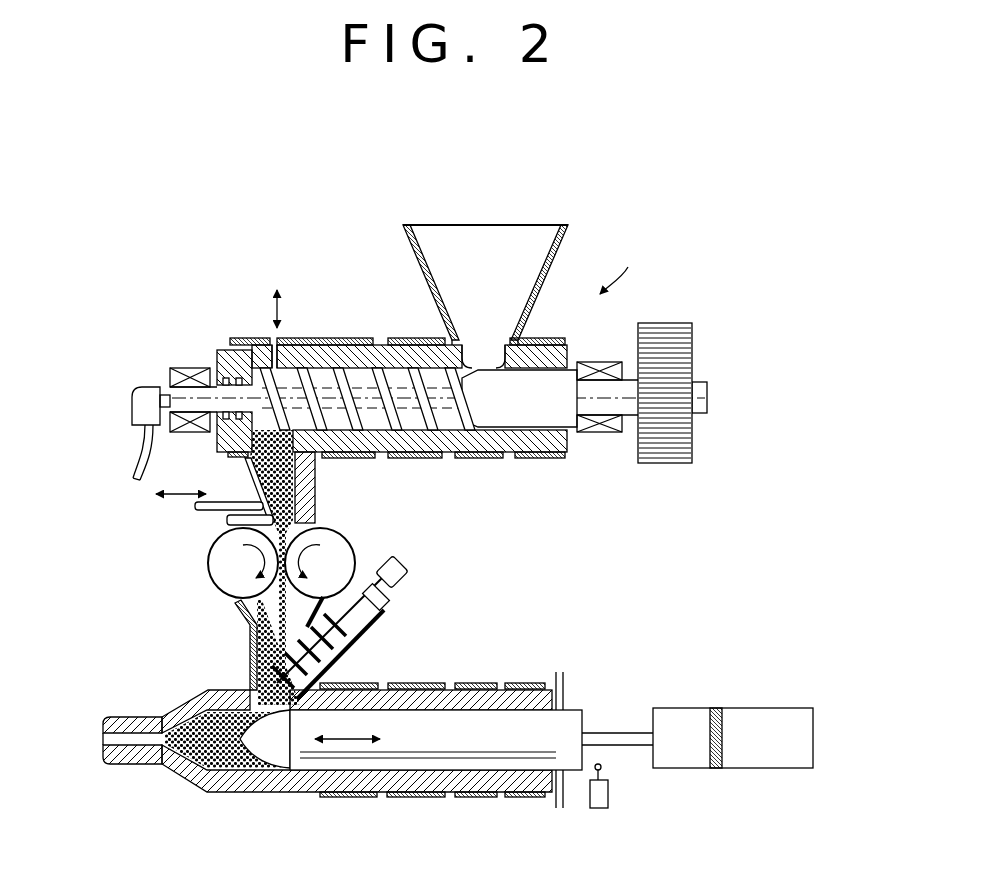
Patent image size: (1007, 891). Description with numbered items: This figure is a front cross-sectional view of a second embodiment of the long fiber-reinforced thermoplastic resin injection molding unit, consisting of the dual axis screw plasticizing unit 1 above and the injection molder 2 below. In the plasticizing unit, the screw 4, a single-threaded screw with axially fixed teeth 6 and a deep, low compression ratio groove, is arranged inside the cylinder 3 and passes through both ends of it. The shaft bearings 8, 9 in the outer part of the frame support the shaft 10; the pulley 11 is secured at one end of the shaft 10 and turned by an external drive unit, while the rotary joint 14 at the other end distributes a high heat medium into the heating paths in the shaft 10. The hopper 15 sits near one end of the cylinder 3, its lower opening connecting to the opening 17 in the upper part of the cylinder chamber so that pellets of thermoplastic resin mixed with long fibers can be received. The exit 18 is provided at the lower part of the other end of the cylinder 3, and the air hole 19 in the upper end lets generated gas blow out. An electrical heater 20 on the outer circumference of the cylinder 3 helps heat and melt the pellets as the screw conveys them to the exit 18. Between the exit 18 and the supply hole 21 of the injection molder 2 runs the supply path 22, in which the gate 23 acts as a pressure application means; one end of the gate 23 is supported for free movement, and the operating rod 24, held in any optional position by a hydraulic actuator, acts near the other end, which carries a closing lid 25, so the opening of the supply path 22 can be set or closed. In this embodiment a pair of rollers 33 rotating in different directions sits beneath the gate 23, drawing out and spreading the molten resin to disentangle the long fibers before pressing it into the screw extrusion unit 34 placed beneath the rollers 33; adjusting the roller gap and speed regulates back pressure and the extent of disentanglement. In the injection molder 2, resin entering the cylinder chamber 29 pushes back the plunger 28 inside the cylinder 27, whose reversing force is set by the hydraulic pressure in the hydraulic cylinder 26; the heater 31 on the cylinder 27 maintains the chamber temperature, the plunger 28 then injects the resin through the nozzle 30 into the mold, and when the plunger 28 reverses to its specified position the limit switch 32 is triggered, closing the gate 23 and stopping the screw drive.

The dual axis screw plasticizing unit 1 is at (622, 265).
The injection molder 2 is at (290, 804).
The cylinder 3 is at (410, 345).
The screw 4 is at (540, 376).
The teeth 6 is at (450, 435).
The shaft bearing 8 is at (183, 368).
The shaft bearing 9 is at (600, 434).
The shaft 10 is at (232, 355).
The pulley 11 is at (692, 340).
The rotary joint 14 is at (136, 392).
The hopper 15 is at (530, 225).
The opening 17 is at (487, 350).
The exit 18 is at (285, 482).
The air hole 19 is at (270, 345).
The electrical heater 20 is at (325, 338).
The supply hole 21 is at (250, 675).
The supply path 22 is at (316, 505).
The gate 23 is at (246, 478).
The operating rod 24 is at (197, 510).
The closing lid 25 is at (226, 522).
The hydraulic cylinder 26 is at (768, 770).
The cylinder 27 is at (385, 798).
The plunger 28 is at (512, 718).
The cylinder chamber 29 is at (208, 746).
The nozzle 30 is at (107, 767).
The heater 31 is at (437, 798).
The limit switch 32 is at (610, 808).
The rollers 33 is at (215, 590).
The screw extrusion unit 34 is at (378, 636).